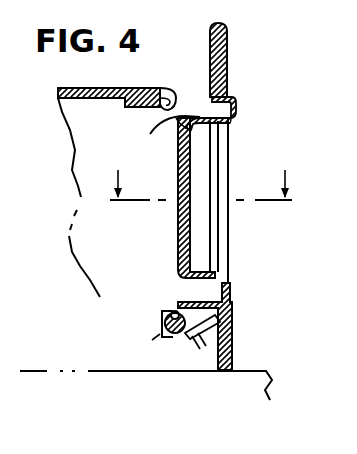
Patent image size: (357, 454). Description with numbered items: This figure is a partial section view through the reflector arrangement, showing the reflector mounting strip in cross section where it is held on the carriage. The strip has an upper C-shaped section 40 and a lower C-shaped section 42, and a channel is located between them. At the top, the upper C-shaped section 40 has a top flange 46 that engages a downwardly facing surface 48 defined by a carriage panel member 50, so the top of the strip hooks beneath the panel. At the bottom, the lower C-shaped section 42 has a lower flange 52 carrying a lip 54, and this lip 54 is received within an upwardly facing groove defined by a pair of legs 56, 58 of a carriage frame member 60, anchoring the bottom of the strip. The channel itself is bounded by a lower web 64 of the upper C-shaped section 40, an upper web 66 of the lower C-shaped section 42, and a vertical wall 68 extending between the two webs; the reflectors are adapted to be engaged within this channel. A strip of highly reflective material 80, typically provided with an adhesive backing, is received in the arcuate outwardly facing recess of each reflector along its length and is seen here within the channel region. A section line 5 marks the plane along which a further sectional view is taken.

The section line 5- 5 is at (201, 199).
The upper C-shaped section 40 is at (220, 102).
The lower C-shaped section 42 is at (236, 316).
The top flange 46 is at (187, 85).
The downwardly facing surface 48 is at (227, 116).
The carriage panel member 50 is at (217, 63).
The lower flange 52 is at (208, 299).
The lip 54 is at (187, 340).
The leg 56 is at (160, 318).
The leg 58 is at (203, 341).
The carriage frame member 60 is at (156, 335).
The lower web 64 is at (180, 128).
The upper web 66 is at (286, 333).
The vertical wall 68 is at (180, 222).
The strip of highly reflective material 80 is at (224, 200).